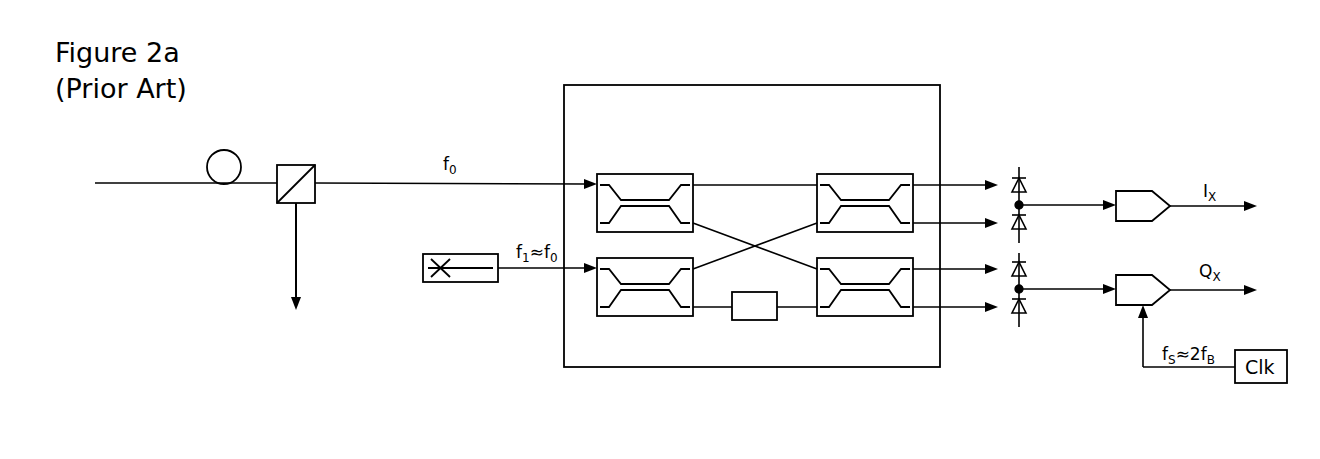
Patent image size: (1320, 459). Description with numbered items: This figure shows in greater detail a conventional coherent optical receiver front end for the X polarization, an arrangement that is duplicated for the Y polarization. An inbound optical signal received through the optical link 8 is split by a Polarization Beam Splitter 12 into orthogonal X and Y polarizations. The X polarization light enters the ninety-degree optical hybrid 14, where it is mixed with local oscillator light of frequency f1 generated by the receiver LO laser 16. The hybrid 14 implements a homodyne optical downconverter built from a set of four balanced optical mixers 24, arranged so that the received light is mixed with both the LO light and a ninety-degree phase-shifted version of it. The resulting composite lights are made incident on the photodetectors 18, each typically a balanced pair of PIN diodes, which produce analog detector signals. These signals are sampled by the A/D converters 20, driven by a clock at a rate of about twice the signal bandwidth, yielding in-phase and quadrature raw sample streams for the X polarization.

The optical link 8 is at (167, 184).
The Polarization Beam Splitter 12 is at (296, 165).
The 90° optical hybrid 14 is at (626, 140).
The receiver LO laser 16 is at (455, 282).
The photodetector 18 is at (1020, 142).
The Analog-to-Digital converter 20 is at (1133, 191).
The balanced optical mixer 24 is at (672, 174).